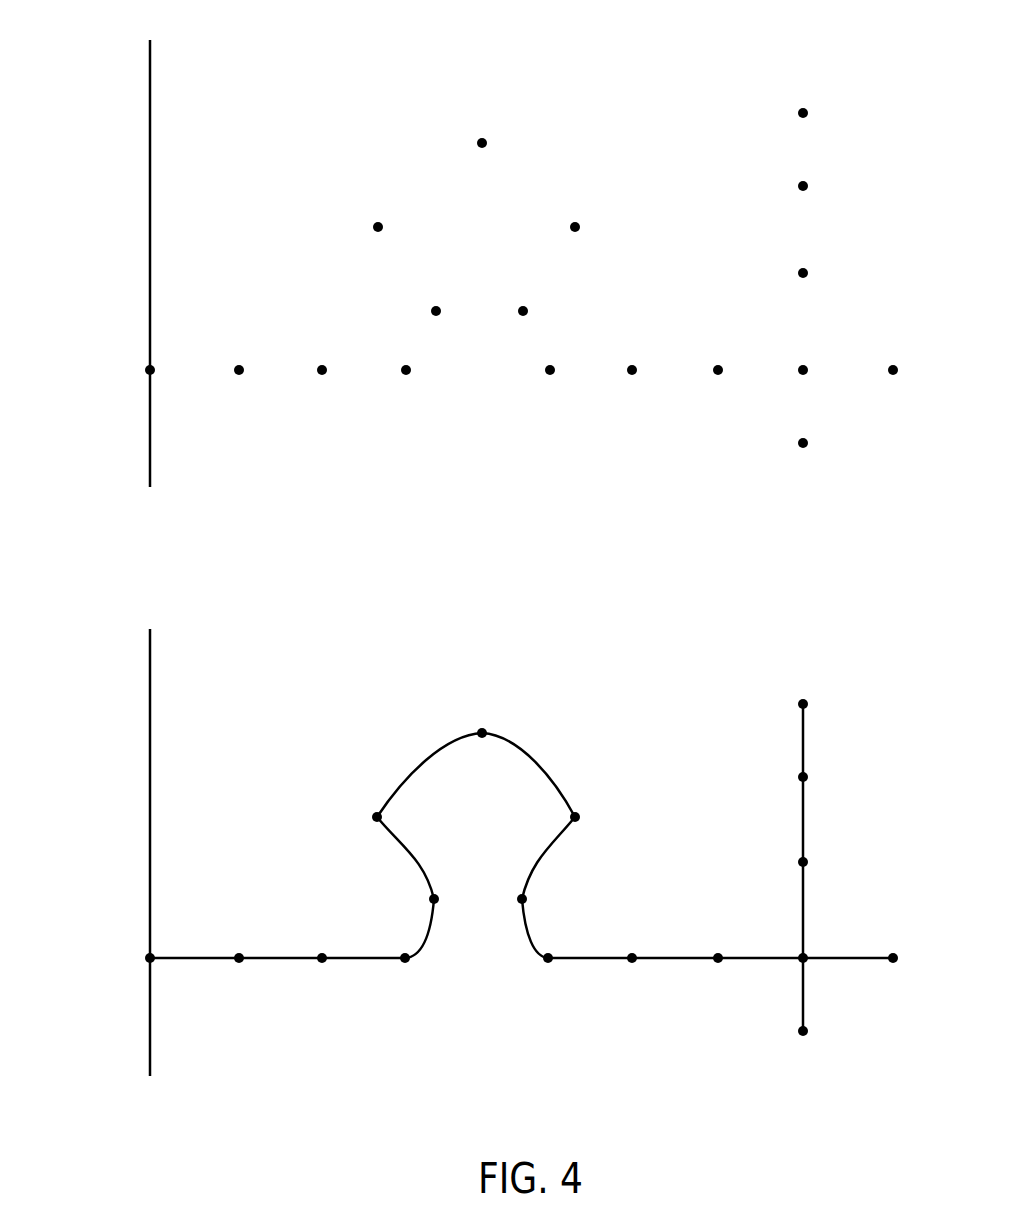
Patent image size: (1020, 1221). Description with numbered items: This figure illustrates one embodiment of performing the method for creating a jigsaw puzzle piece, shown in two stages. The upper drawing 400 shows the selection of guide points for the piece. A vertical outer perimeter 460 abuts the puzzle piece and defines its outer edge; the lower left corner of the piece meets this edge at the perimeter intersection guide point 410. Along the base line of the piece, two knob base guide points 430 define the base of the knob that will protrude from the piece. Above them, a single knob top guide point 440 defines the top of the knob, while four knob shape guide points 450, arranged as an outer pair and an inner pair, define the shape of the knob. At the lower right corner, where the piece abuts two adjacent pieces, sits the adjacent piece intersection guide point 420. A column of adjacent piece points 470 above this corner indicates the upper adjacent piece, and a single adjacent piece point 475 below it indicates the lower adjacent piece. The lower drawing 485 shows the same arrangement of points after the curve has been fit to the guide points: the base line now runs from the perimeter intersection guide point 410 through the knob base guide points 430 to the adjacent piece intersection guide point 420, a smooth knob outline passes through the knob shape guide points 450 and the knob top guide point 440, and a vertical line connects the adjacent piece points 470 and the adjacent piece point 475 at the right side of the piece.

The drawing 400 is at (548, 55).
The drawing 485 is at (548, 645).
The perimeter intersection guide point 410 is at (151, 374).
The adjacent piece intersection guide point 420 is at (802, 376).
The knob base guide points 430 is at (550, 375).
The knob top guide point 440 is at (485, 140).
The knob shape guide points 450 is at (569, 227).
The outer perimeter 460 is at (146, 130).
The adjacent piece points 470 is at (805, 115).
The adjacent piece point 475 is at (808, 441).